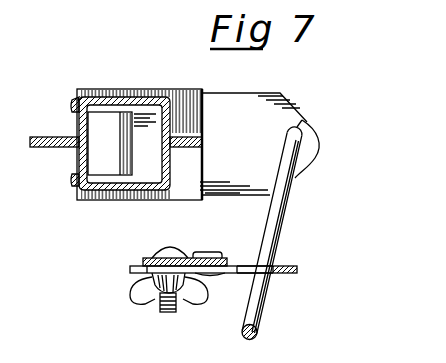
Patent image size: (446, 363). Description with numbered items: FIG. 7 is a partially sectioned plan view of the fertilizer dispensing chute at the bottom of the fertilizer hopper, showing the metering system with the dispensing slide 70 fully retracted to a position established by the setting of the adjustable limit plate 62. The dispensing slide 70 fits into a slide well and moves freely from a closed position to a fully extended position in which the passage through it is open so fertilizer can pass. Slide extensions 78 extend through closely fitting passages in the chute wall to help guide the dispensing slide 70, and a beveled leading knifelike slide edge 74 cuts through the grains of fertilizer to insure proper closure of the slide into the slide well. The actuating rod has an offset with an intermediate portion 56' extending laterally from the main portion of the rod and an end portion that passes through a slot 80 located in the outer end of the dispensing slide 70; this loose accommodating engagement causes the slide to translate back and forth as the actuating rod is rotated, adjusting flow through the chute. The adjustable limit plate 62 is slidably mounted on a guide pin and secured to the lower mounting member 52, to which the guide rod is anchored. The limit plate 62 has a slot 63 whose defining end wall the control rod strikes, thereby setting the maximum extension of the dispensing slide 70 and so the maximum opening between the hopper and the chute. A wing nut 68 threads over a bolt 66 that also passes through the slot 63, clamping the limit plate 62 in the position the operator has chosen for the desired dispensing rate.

The lower mounting member 52 is at (147, 258).
The intermediate portion 56' is at (288, 235).
The adjustable limit plate 62 is at (290, 265).
The slot 63 is at (247, 266).
The bolt 66 is at (168, 313).
The wing nut 68 is at (141, 307).
The dispensing slide 70 is at (250, 92).
The beveled leading knifelike slide edge 74 is at (125, 139).
The slide extensions 78 is at (74, 103).
The slot 80 is at (302, 120).